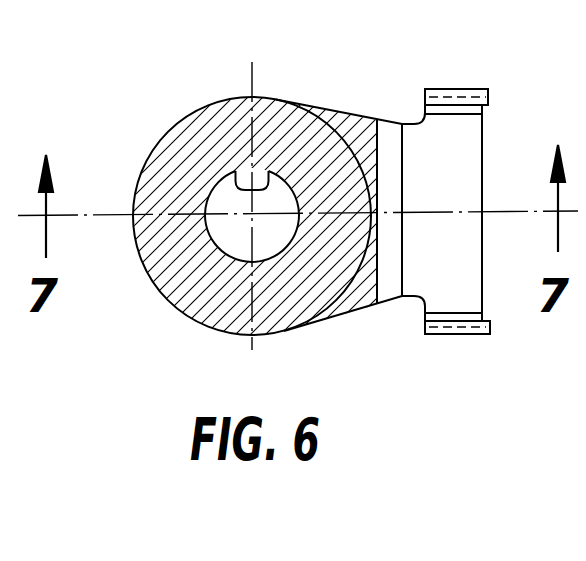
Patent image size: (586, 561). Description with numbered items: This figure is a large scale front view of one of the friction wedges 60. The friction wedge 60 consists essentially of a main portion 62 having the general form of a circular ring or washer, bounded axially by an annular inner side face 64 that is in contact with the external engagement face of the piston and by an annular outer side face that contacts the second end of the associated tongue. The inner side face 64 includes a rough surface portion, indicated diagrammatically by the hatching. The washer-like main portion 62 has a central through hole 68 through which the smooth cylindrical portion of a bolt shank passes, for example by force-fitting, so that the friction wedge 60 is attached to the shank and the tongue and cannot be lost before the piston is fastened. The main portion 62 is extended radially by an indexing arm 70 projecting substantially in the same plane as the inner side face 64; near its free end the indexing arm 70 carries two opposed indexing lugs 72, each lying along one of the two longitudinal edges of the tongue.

The friction wedge 60 is at (374, 100).
The main portion 62 is at (152, 284).
The annular inner side face 64 is at (188, 126).
The central through hole 68 is at (265, 170).
The indexing arm 70 is at (414, 160).
The indexing lugs 72 is at (451, 88).